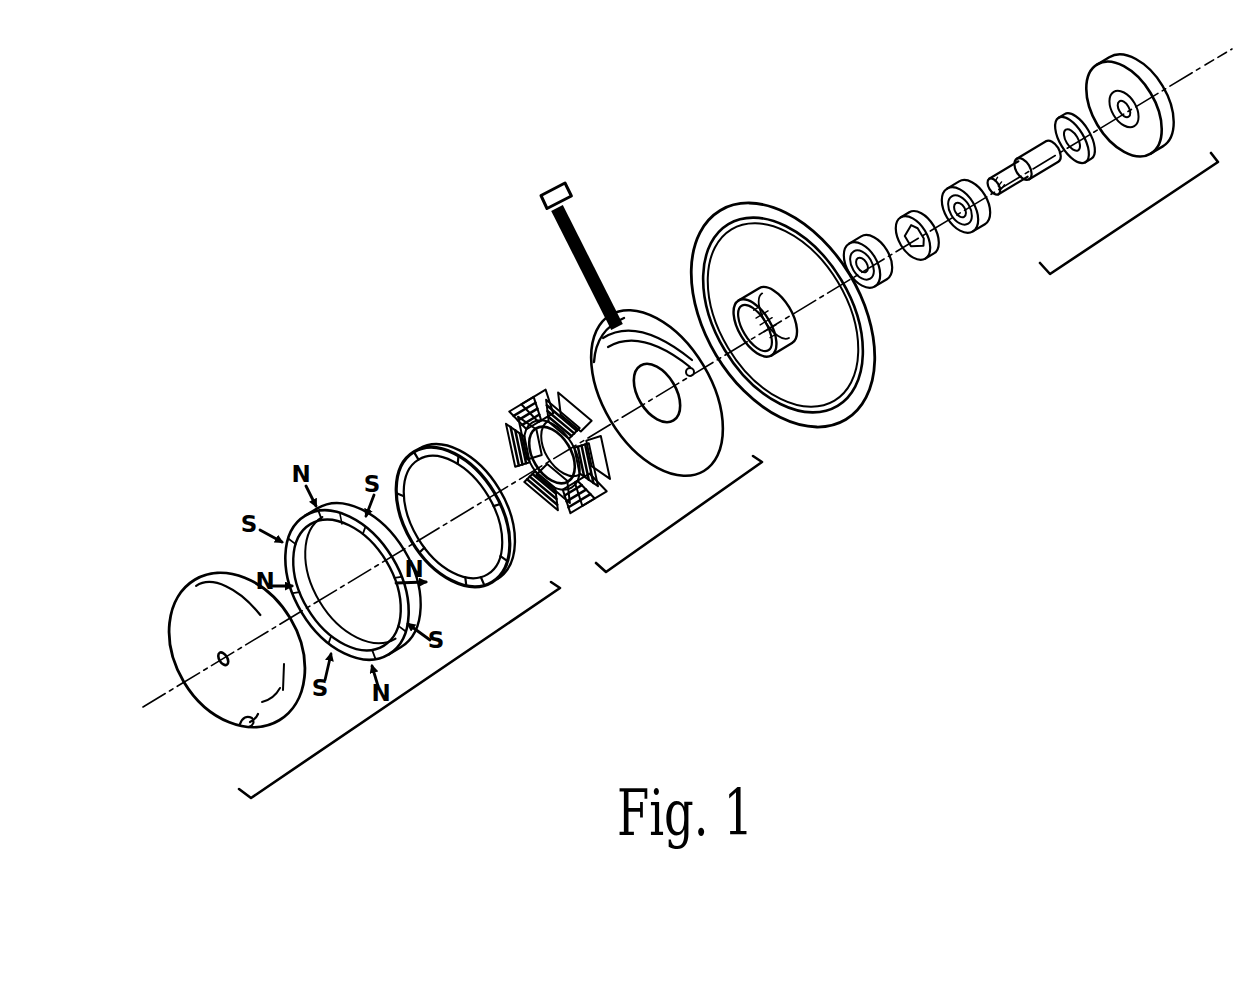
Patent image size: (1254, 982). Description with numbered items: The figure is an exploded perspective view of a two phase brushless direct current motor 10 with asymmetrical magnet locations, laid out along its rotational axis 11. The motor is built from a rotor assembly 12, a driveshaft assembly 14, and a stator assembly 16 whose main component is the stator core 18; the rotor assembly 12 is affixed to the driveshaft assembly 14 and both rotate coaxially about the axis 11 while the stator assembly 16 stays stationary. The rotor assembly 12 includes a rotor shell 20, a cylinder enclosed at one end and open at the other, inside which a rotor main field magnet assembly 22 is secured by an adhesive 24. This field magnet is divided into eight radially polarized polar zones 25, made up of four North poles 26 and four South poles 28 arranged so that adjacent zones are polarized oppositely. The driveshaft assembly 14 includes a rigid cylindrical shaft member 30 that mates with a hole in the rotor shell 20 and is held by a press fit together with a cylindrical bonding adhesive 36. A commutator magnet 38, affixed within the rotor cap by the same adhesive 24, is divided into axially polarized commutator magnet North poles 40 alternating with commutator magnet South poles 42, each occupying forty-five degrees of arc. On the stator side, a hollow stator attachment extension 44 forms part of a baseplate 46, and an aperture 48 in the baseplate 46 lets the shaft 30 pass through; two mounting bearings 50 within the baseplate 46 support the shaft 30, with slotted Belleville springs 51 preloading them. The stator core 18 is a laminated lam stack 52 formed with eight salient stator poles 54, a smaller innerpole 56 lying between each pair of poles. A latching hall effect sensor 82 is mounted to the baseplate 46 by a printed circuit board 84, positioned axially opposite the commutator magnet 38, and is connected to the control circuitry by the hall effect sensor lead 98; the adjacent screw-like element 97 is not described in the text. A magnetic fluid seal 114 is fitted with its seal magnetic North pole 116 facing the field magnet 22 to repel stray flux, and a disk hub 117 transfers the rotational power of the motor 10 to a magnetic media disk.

The brushless DC motor 10 is at (302, 252).
The rotational axis 11 is at (154, 702).
The rotor assembly 12 is at (418, 694).
The driveshaft assembly 14 is at (1118, 224).
The stator assembly 16 is at (668, 524).
The stator core 18 is at (558, 520).
The rotor shell 20 is at (200, 626).
The rotor main field magnet assembly 22 is at (286, 577).
The adhesive 24 is at (256, 720).
The polar zones 25 is at (341, 516).
The North poles 26 is at (313, 590).
The South poles 28 is at (354, 632).
The shaft member 30 is at (1012, 168).
The cylindrical bonding adhesive 36 is at (222, 666).
The commutator magnet 38 is at (406, 462).
The commutator magnet North poles 40 is at (438, 452).
The commutator magnet South poles 42 is at (400, 488).
The stator attachment extension 44 is at (786, 344).
The baseplate 46 is at (733, 277).
The aperture 48 is at (766, 350).
The mounting bearings 50 is at (858, 244).
The slotted Belleville springs 51 is at (926, 254).
The lam stack 52 is at (514, 436).
The salient stator poles 54 is at (586, 400).
The innerpole 56 is at (606, 476).
The latching hall effect sensor 82 is at (691, 378).
The printed circuit board 84 is at (602, 389).
The screw 97 is at (596, 264).
The hall effect sensor lead 98 is at (572, 278).
The magnetic fluid seal 114 is at (1062, 126).
The seal magnetic North pole 116 is at (1068, 158).
The disk hub 117 is at (1096, 80).